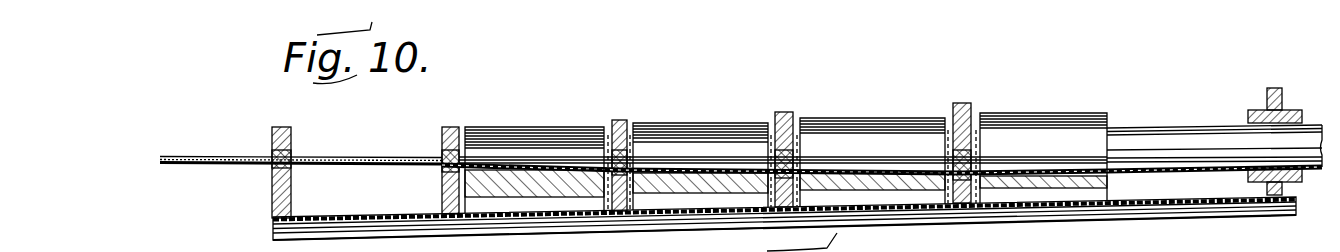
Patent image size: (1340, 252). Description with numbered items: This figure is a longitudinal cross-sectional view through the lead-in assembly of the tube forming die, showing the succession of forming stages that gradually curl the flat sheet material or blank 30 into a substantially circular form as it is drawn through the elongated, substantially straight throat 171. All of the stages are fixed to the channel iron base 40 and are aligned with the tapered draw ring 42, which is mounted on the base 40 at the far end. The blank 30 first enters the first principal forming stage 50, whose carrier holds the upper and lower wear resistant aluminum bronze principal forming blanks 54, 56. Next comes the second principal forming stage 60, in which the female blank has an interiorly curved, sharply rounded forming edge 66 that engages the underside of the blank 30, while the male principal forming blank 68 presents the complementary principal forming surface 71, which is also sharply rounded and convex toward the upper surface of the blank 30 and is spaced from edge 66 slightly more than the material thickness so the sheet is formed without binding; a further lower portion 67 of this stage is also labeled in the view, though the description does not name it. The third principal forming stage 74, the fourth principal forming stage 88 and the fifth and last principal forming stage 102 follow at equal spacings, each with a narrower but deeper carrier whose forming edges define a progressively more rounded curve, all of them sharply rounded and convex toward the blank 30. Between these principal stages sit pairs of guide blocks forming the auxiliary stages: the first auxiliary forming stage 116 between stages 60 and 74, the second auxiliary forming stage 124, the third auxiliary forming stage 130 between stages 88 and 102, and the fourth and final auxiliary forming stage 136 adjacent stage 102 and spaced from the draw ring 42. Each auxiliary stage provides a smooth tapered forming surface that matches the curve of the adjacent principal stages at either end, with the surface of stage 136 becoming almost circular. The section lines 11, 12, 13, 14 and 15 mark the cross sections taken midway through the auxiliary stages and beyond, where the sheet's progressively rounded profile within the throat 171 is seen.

The blank 30 is at (203, 164).
The channel iron base 40 is at (1296, 215).
The tapered draw ring 42 is at (1286, 115).
The first principal forming stage 50 is at (268, 128).
The upper principal forming blank 54 is at (292, 148).
The lower principal forming blank 56 is at (291, 172).
The second principal forming stage 60 is at (440, 127).
The forming edge 66 is at (443, 170).
The lower bushing part 67 is at (443, 190).
The male principal forming blank 68 is at (443, 149).
The principal forming surface 71 is at (442, 158).
The third principal forming stage 74 is at (619, 118).
The fourth principal forming stage 88 is at (786, 111).
The fifth principal forming stage 102 is at (990, 80).
The first auxiliary forming stage 116 is at (483, 125).
The second auxiliary forming stage 124 is at (661, 125).
The third auxiliary forming stage 130 is at (913, 117).
The fourth auxiliary forming stage 136 is at (1092, 110).
The throat 171 is at (1087, 150).
The section line 11- 11 is at (556, 103).
The section line 12- 12 is at (709, 160).
The section line 13- 13 is at (874, 160).
The section line 14- 14 is at (1048, 160).
The section line 15- 15 is at (1246, 195).